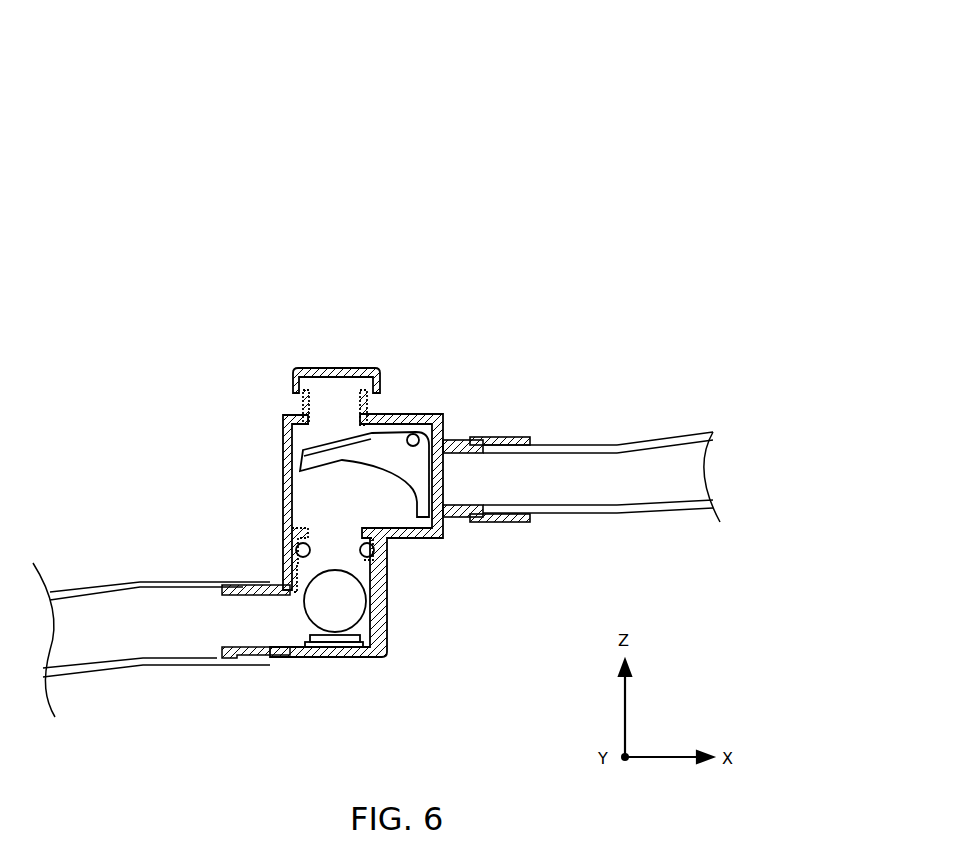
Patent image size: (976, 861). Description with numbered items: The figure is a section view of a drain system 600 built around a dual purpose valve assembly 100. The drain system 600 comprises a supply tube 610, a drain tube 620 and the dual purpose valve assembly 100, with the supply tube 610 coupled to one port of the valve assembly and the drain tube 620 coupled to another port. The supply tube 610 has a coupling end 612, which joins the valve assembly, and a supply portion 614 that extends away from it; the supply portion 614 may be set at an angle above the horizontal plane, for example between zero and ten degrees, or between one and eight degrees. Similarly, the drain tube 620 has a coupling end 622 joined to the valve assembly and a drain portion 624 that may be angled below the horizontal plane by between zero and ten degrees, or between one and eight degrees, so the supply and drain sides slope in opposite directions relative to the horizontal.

The drain system 600 is at (196, 100).
The dual purpose valve assembly 100 is at (294, 409).
The supply tube 610 is at (587, 477).
The coupling end 612 is at (512, 452).
The supply portion 614 is at (688, 435).
The drain tube 620 is at (110, 625).
The coupling end 622 is at (207, 583).
The drain portion 624 is at (62, 678).